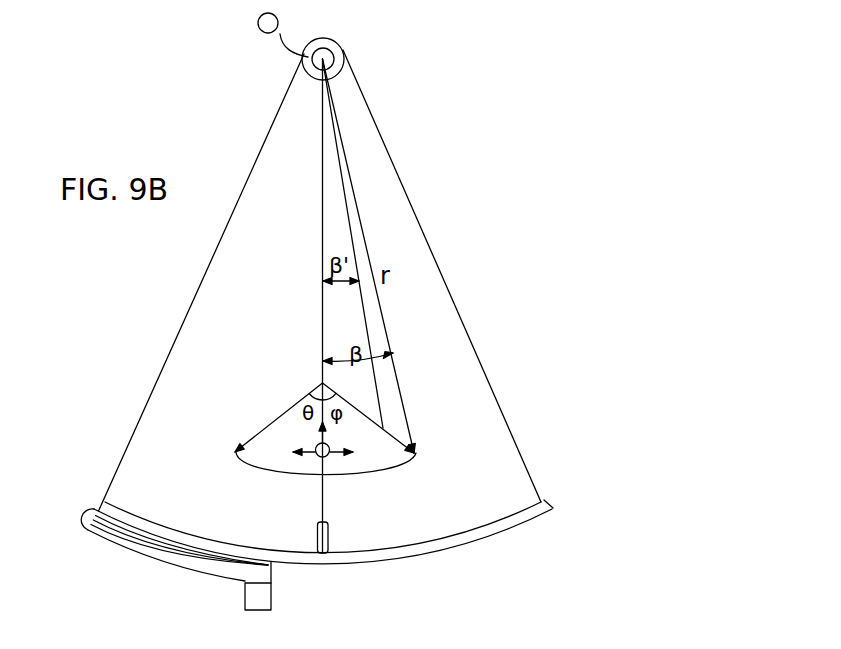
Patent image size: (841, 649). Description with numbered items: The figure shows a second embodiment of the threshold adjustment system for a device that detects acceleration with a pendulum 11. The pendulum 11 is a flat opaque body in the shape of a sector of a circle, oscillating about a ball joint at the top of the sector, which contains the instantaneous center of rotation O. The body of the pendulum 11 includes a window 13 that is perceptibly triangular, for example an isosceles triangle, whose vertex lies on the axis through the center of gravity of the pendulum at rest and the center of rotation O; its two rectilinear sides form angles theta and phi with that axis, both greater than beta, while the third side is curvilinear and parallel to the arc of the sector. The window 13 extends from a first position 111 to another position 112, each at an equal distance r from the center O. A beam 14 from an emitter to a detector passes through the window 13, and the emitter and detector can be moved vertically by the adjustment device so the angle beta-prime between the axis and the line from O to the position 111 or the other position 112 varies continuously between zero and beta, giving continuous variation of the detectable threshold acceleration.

The pendulum 11 is at (433, 256).
The window 13 is at (381, 462).
The beam 14 is at (341, 457).
The first position 111 is at (420, 453).
The other position 112 is at (235, 452).